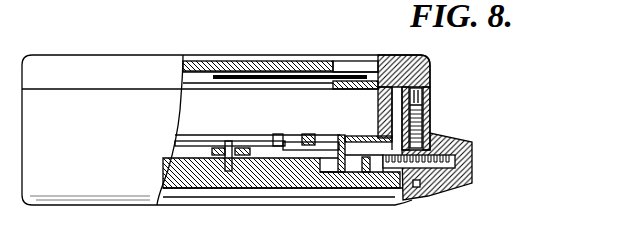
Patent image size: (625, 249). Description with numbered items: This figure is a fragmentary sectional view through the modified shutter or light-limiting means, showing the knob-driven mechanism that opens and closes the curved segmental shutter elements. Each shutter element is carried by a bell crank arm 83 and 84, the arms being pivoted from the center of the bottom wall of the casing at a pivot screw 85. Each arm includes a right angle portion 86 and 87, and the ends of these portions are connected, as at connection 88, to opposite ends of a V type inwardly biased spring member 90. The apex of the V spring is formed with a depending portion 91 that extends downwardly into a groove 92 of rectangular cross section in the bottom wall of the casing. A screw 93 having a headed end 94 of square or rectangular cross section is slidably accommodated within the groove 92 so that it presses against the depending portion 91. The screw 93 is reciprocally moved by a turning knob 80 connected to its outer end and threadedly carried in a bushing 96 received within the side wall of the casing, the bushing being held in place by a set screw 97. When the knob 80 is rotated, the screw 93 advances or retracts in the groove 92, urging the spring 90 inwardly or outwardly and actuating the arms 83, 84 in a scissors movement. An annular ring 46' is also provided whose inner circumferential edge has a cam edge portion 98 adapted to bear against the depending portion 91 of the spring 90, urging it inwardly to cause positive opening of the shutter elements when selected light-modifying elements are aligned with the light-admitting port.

The bell crank arm 83 is at (163, 158).
The bell crank arm 84 is at (210, 141).
The pivot screw 85 is at (228, 141).
The right angle portion 86 is at (275, 140).
The right angle portion 87 is at (312, 160).
The connection 88 is at (285, 142).
The V type inwardly biased spring member 90 is at (317, 142).
The depending portion 91 is at (342, 172).
The groove 92 is at (330, 172).
The screw 93 is at (470, 153).
The headed end 94 is at (367, 172).
The bushing 96 is at (432, 137).
The set screw 97 is at (418, 112).
The cam edge portion 98 is at (246, 134).
The turning knob 80 is at (450, 140).
The annular ring 46' is at (366, 127).